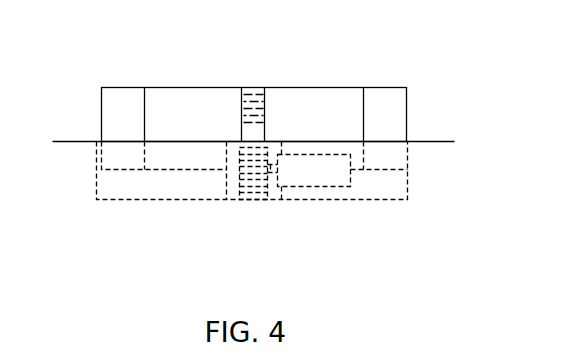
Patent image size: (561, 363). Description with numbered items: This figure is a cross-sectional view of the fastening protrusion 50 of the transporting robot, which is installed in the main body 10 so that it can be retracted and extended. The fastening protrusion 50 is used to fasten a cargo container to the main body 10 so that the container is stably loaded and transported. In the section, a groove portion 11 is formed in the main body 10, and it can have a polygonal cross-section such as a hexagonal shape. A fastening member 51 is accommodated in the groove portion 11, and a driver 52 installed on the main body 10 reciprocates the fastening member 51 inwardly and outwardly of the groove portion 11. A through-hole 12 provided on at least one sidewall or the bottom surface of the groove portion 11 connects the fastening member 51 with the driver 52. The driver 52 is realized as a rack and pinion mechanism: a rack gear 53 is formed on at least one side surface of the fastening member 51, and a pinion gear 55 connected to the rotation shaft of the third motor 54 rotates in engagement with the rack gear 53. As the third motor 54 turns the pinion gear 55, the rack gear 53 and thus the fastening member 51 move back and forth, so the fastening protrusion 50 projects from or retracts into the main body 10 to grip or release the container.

The fastening protrusion 50 is at (96, 44).
The fastening member 51 is at (316, 103).
The rack gear 53 is at (251, 100).
The main body 10 is at (431, 153).
The groove portion 11 is at (410, 182).
The through-hole 12 is at (217, 181).
The pinion gear 55 is at (255, 200).
The third motor 54 is at (322, 178).
The driver 52 is at (273, 206).